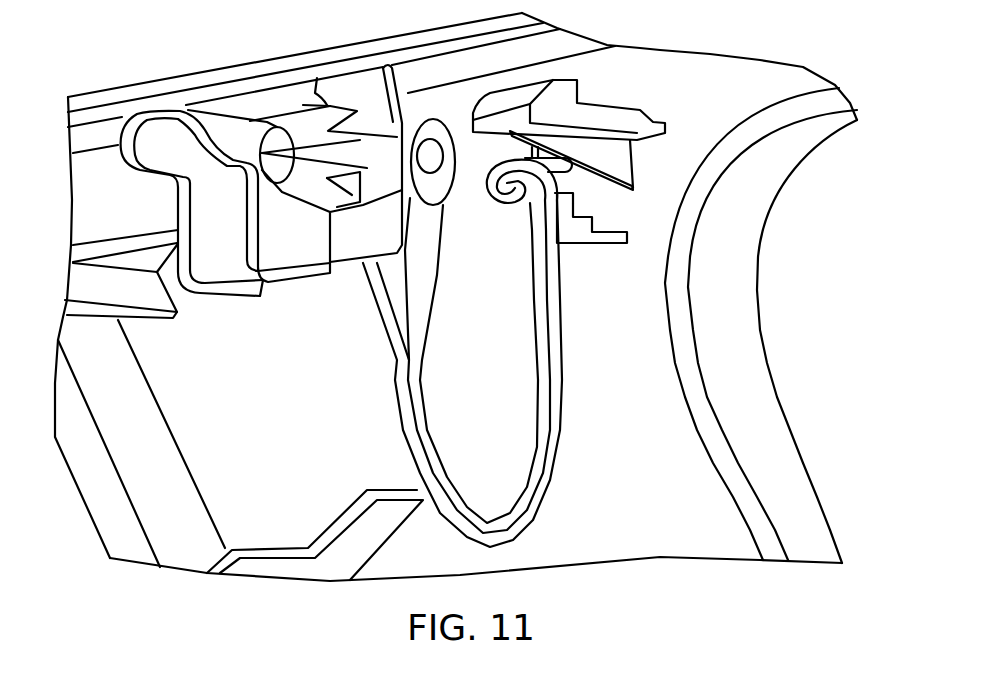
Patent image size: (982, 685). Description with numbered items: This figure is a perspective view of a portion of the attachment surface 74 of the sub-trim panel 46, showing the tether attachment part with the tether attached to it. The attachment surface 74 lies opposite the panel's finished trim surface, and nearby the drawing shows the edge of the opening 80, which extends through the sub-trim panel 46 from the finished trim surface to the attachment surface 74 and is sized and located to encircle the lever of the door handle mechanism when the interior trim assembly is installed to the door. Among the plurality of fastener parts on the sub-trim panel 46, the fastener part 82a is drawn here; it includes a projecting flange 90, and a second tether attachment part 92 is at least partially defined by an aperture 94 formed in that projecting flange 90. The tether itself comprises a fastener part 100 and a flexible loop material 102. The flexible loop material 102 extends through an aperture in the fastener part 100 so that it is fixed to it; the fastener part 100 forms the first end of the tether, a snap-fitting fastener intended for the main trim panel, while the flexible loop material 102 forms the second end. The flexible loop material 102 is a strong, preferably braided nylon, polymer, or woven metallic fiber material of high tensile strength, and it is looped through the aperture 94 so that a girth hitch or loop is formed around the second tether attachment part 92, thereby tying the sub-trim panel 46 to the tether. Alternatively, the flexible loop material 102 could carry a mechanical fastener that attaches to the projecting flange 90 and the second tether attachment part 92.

The sub-trim panel 46 is at (744, 31).
The attachment surface 74 is at (678, 79).
The opening 80 is at (758, 290).
The fastener part 82a is at (600, 107).
The projecting flange 90 is at (570, 233).
The second tether attachment part 92 is at (562, 228).
The aperture 94 is at (578, 204).
The fastener part 100 is at (298, 120).
The flexible loop material 102 is at (558, 404).